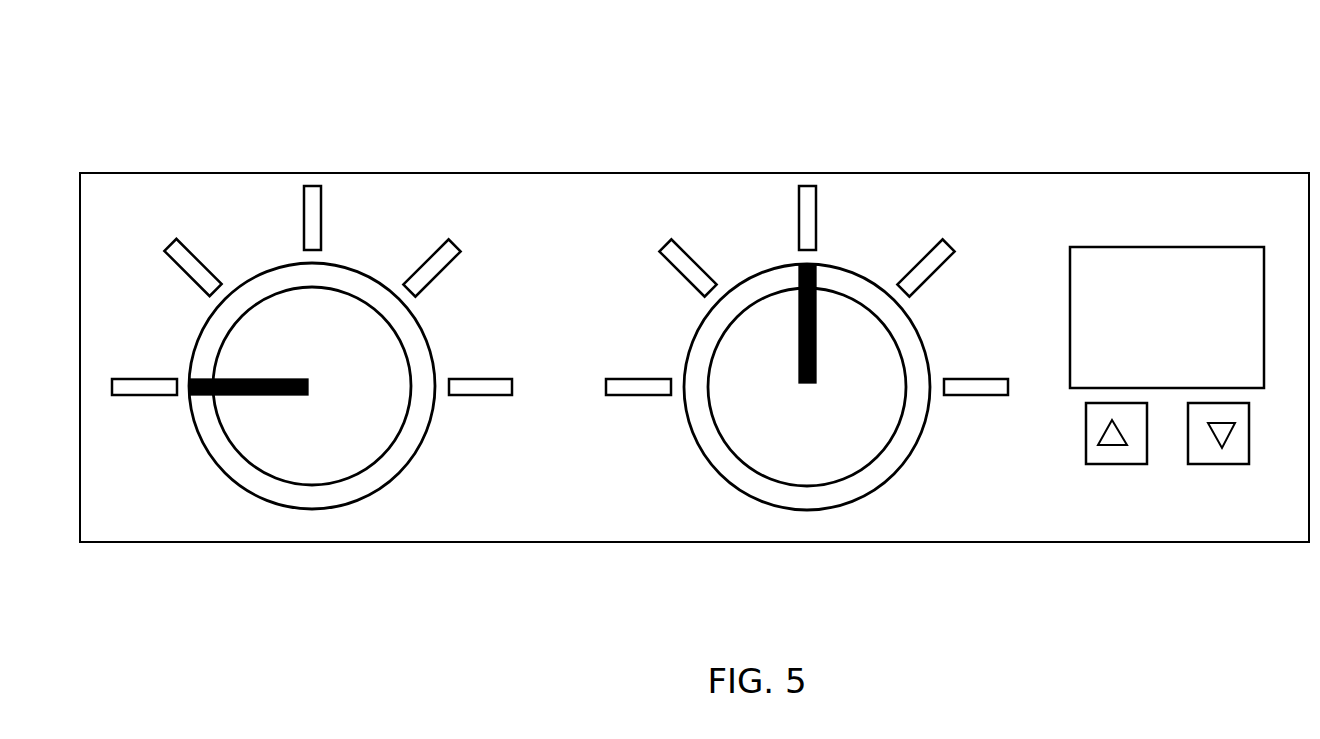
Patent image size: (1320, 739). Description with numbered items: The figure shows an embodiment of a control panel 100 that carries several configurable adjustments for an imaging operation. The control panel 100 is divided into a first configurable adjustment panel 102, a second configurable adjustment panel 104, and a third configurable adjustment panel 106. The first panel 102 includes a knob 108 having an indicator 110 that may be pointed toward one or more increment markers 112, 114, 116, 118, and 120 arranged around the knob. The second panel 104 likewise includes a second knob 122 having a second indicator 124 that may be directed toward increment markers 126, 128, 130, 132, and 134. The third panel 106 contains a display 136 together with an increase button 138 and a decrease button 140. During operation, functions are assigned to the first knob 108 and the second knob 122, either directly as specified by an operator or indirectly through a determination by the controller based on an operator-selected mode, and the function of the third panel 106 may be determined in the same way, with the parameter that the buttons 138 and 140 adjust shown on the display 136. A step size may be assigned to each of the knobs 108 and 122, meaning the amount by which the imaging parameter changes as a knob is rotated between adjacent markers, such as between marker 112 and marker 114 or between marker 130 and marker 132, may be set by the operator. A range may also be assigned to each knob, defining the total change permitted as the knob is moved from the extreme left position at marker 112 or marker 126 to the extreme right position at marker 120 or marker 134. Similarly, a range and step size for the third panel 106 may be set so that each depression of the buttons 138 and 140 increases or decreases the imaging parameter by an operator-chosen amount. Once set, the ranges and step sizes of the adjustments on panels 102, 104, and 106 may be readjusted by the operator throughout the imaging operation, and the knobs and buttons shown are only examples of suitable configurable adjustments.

The control panel 100 is at (826, 86).
The first configurable adjustment panel 102 is at (247, 240).
The second configurable adjustment panel 104 is at (742, 240).
The third configurable adjustment panel 106 is at (1170, 512).
The knob 108 is at (320, 310).
The indicator 110 is at (243, 398).
The increment marker 112 is at (130, 378).
The increment marker 114 is at (192, 250).
The increment marker 116 is at (321, 212).
The increment marker 118 is at (445, 272).
The increment marker 120 is at (478, 378).
The second knob 122 is at (735, 396).
The second indicator 124 is at (818, 312).
The increment marker 126 is at (624, 378).
The increment marker 128 is at (687, 250).
The increment marker 130 is at (816, 212).
The increment marker 132 is at (940, 272).
The increment marker 134 is at (972, 378).
The display 136 is at (1152, 262).
The increase button 138 is at (1093, 456).
The decrease button 140 is at (1232, 456).